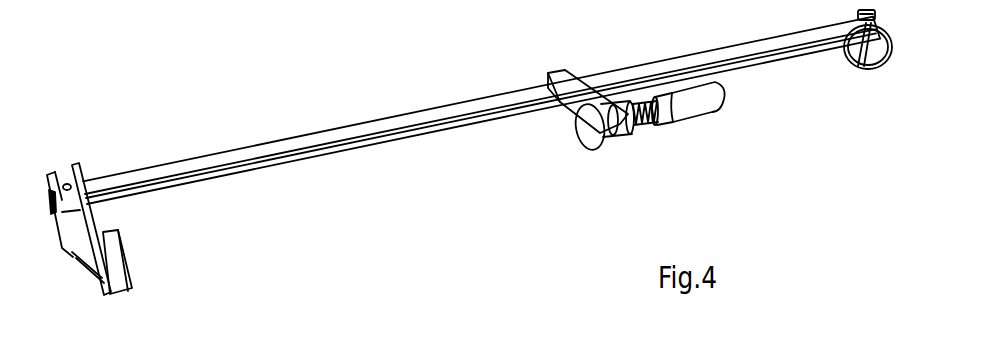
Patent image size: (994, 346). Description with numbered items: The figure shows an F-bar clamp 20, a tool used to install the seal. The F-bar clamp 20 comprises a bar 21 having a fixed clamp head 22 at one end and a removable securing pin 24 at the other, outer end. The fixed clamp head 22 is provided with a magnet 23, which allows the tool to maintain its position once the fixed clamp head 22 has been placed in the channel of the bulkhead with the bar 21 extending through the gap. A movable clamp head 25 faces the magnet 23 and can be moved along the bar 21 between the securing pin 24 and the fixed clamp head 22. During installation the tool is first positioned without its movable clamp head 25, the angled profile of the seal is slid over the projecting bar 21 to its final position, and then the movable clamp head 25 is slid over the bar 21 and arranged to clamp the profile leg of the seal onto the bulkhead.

The F-bar clamp 20 is at (293, 119).
The bar 21 is at (430, 125).
The fixed clamp head 22 is at (88, 252).
The magnet 23 is at (121, 286).
The removable securing pin 24 is at (852, 67).
The movable clamp head 25 is at (585, 138).